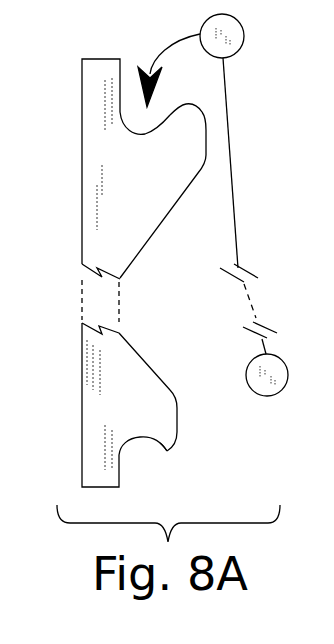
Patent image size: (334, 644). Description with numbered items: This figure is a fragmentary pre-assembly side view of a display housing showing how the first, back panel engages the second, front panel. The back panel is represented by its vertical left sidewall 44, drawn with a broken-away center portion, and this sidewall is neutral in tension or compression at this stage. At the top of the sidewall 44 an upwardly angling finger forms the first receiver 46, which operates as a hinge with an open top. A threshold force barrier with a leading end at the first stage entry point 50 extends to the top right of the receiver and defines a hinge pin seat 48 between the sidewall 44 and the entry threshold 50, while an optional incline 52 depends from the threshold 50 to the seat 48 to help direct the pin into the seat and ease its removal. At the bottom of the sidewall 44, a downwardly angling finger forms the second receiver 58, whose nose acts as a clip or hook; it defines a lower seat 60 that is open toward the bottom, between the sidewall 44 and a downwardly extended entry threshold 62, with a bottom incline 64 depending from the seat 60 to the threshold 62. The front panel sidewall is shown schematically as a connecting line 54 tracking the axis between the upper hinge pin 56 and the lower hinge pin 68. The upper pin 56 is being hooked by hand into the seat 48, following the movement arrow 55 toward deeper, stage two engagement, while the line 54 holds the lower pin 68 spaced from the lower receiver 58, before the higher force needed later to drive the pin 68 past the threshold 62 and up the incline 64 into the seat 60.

The left sidewall 44 is at (84, 266).
The first receiver 46 is at (85, 115).
The hinge pin seat 48 is at (141, 134).
The first stage entry point 50 is at (188, 104).
The incline 52 is at (166, 127).
The connecting line 54 is at (232, 146).
The movement arrow 55 is at (144, 68).
The upper hinge pin 56 is at (240, 44).
The second receiver 58 is at (84, 428).
The lower seat 60 is at (137, 437).
The lower entry threshold 62 is at (167, 451).
The bottom incline 64 is at (163, 447).
The lower hinge pin 68 is at (265, 394).